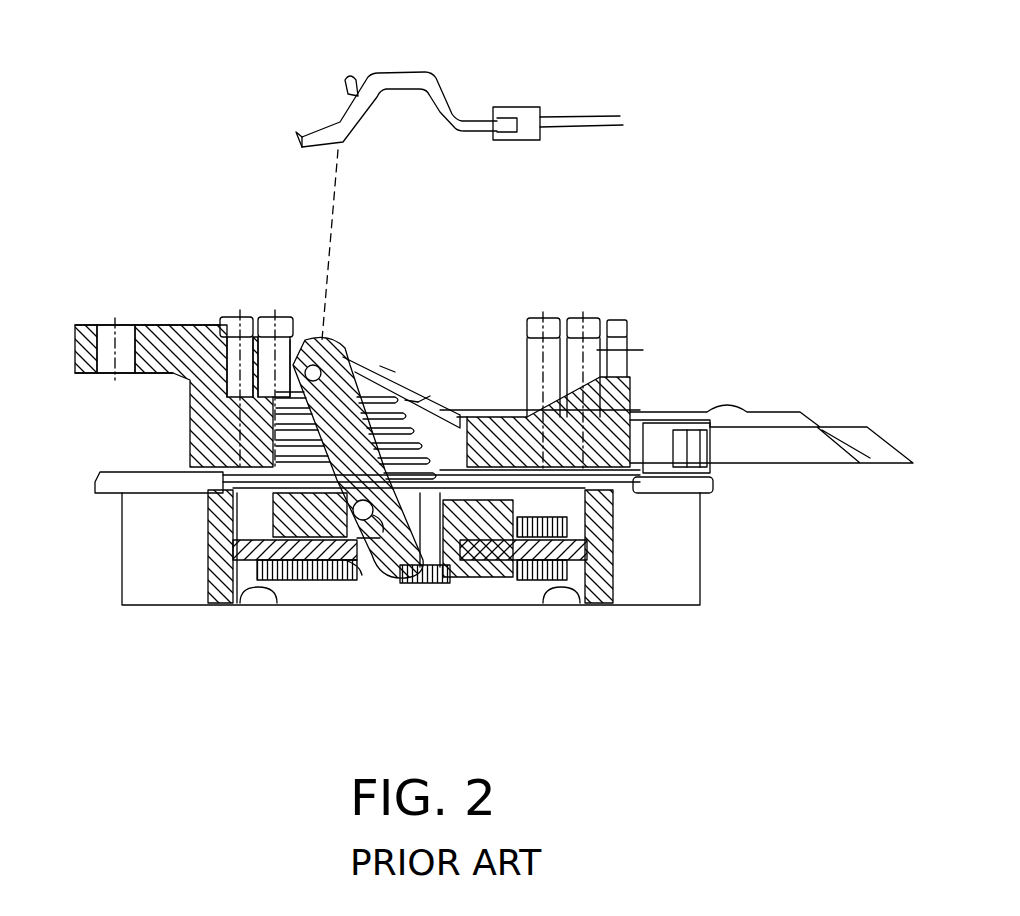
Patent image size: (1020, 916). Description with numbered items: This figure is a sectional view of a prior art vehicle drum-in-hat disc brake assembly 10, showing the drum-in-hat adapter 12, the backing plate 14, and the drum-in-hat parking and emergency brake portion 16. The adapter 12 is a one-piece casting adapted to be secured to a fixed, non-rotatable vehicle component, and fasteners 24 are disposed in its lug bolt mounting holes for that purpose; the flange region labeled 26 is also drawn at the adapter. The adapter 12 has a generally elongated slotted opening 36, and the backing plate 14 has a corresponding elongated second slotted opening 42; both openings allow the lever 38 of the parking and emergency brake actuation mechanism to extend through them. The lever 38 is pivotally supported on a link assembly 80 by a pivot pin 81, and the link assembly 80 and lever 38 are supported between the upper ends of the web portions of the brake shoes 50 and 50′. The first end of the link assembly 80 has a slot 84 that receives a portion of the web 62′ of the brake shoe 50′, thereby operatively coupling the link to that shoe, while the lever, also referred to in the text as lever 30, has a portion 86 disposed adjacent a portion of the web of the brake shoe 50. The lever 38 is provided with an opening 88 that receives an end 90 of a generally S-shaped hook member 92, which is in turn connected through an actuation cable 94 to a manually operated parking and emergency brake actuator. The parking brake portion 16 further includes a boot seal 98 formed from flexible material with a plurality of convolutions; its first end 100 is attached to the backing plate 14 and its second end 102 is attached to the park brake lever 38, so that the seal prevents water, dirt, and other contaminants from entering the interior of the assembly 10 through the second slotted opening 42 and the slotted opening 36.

The vehicle drum-in-hat disc brake assembly 10 is at (690, 303).
The drum-in-hat adapter 12 is at (188, 408).
The backing plate 14 is at (725, 485).
The drum-in-hat parking and emergency brake portion 16 is at (383, 366).
The fasteners 24 is at (562, 317).
The mounting flange 26 is at (87, 330).
The lever 30 is at (100, 362).
The elongated slotted opening 36 is at (469, 430).
The lever 38 is at (335, 354).
The second slotted opening 42 is at (420, 548).
The brake shoe 50 is at (215, 608).
The brake shoe 50′ is at (603, 610).
The web portion 62′ is at (608, 540).
The link assembly 80 is at (465, 545).
The pivot pin 81 is at (368, 545).
The slot 84 is at (500, 553).
The portion 86 is at (350, 562).
The opening 88 is at (254, 400).
The end 90 is at (302, 147).
The S-shaped hook member 92 is at (353, 90).
The actuation cable 94 is at (563, 120).
The boot seal 98 is at (418, 402).
The first end 100 is at (365, 520).
The second end 102 is at (408, 400).